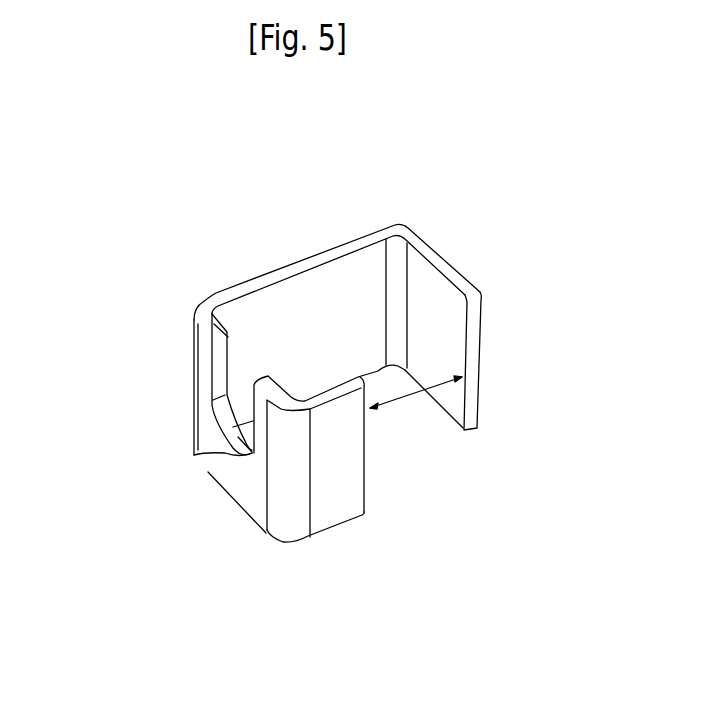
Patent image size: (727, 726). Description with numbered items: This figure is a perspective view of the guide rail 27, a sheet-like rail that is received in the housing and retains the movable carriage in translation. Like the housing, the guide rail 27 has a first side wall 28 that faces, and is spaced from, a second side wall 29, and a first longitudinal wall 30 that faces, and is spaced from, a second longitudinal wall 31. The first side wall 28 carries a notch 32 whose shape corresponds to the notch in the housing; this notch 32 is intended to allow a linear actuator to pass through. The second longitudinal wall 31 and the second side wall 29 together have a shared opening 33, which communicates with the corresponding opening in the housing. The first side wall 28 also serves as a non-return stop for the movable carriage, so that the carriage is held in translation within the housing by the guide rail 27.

The guide rail 27 is at (347, 379).
The first side wall 28 is at (238, 505).
The second side wall 29 is at (445, 257).
The first longitudinal wall 30 is at (298, 262).
The second longitudinal wall 31 is at (342, 527).
The notch 32 is at (193, 448).
The shared opening 33 is at (405, 373).